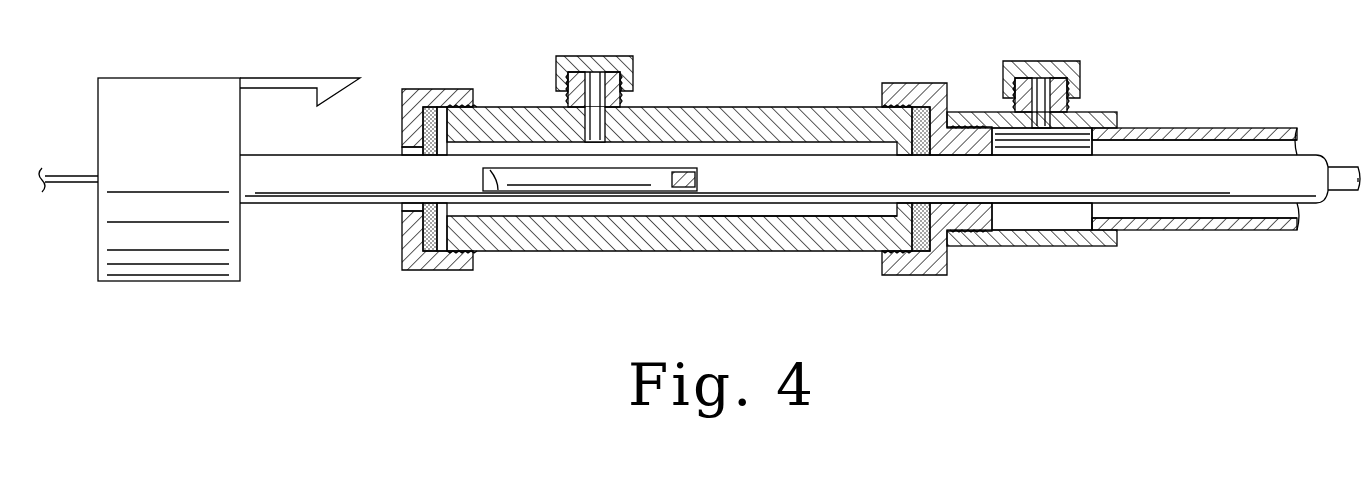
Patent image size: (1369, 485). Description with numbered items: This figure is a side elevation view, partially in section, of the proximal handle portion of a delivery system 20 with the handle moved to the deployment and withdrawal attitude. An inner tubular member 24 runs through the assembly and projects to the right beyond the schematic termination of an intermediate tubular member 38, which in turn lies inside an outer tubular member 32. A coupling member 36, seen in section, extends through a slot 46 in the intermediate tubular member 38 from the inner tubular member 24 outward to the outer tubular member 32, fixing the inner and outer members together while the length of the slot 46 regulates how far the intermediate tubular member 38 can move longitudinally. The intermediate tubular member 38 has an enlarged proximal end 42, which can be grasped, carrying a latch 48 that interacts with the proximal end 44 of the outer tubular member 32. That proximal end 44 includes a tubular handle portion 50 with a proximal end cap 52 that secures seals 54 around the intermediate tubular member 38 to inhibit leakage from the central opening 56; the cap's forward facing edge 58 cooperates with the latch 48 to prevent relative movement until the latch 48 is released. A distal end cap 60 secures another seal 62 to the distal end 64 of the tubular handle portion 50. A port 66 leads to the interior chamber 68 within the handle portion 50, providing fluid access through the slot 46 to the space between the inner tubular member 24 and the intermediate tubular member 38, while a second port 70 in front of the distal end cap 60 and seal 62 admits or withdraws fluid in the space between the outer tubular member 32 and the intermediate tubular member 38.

The delivery system 20 is at (1067, 307).
The inner tubular member 24 is at (640, 170).
The outer tubular member 32 is at (790, 120).
The coupling member 36 is at (686, 191).
The intermediate tubular member 38 is at (327, 180).
The proximal end of intermediate tubular member 42 is at (160, 88).
The proximal end of outer tubular member 44 is at (420, 265).
The slot 46 is at (495, 187).
The latch 48 is at (282, 82).
The tubular handle portion 50 is at (590, 243).
The proximal end cap 52 is at (432, 93).
The seals 54 is at (423, 133).
The central opening 56 is at (405, 207).
The forward facing edge 58 is at (476, 98).
The distal end cap 60 is at (912, 95).
The seal 62 is at (940, 262).
The distal end of tubular handle portion 64 is at (920, 253).
The port 66 is at (592, 80).
The interior chamber 68 is at (753, 230).
The second port 70 is at (1045, 82).